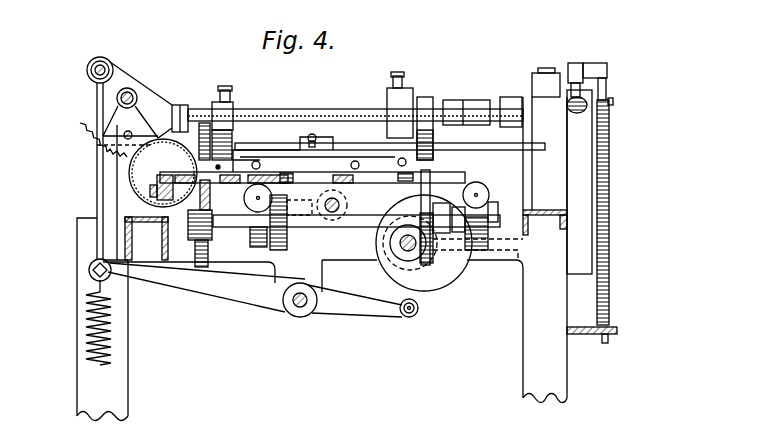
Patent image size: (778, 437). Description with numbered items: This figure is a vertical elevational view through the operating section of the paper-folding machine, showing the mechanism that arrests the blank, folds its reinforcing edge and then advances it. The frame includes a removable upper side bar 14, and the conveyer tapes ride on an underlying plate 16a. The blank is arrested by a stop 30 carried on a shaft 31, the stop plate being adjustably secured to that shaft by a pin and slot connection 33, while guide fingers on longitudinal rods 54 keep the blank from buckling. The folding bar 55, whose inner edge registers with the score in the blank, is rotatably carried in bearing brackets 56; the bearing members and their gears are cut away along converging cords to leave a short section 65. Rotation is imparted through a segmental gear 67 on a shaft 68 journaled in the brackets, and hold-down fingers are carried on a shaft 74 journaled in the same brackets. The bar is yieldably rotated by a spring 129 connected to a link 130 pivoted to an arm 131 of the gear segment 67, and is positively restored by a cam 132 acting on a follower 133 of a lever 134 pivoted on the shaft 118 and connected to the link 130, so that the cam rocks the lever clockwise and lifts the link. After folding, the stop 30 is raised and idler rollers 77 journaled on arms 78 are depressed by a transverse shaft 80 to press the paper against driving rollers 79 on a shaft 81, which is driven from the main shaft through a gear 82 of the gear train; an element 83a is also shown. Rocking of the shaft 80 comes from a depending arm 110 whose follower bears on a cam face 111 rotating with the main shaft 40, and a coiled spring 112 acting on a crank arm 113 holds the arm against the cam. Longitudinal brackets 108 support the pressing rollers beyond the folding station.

The arm 131 is at (111, 57).
The shaft 68 is at (131, 88).
The short section 65 is at (176, 105).
The transverse shaft 80 is at (337, 109).
The idler rollers 77 is at (203, 123).
The arms 78 is at (233, 108).
The pin and slot connection 33 is at (313, 134).
The stop 30 is at (341, 158).
The longitudinal rods 54 is at (219, 166).
The shaft 31 is at (472, 152).
The plate 16a is at (356, 177).
The bearing brackets 56 is at (128, 183).
The folding bar 55 is at (150, 193).
The shaft 74 is at (105, 154).
The segmental gear 67 is at (90, 128).
The link 130 is at (97, 244).
The spring 129 is at (85, 349).
The upper side bar 14 is at (132, 236).
The driving rollers 79 is at (186, 285).
The shaft 118 is at (303, 313).
The lever 134 is at (266, 301).
The follower 133 is at (408, 318).
The shaft 40 is at (434, 294).
The cam 132 is at (416, 253).
The cam face 111 is at (398, 266).
The transverse shaft 81 is at (298, 227).
The gear 82 is at (318, 200).
The shaft 83a is at (347, 207).
The depending arm 110 is at (526, 192).
The crank arm 113 is at (575, 65).
The coiled spring 112 is at (610, 183).
The longitudinal brackets 108 is at (591, 336).